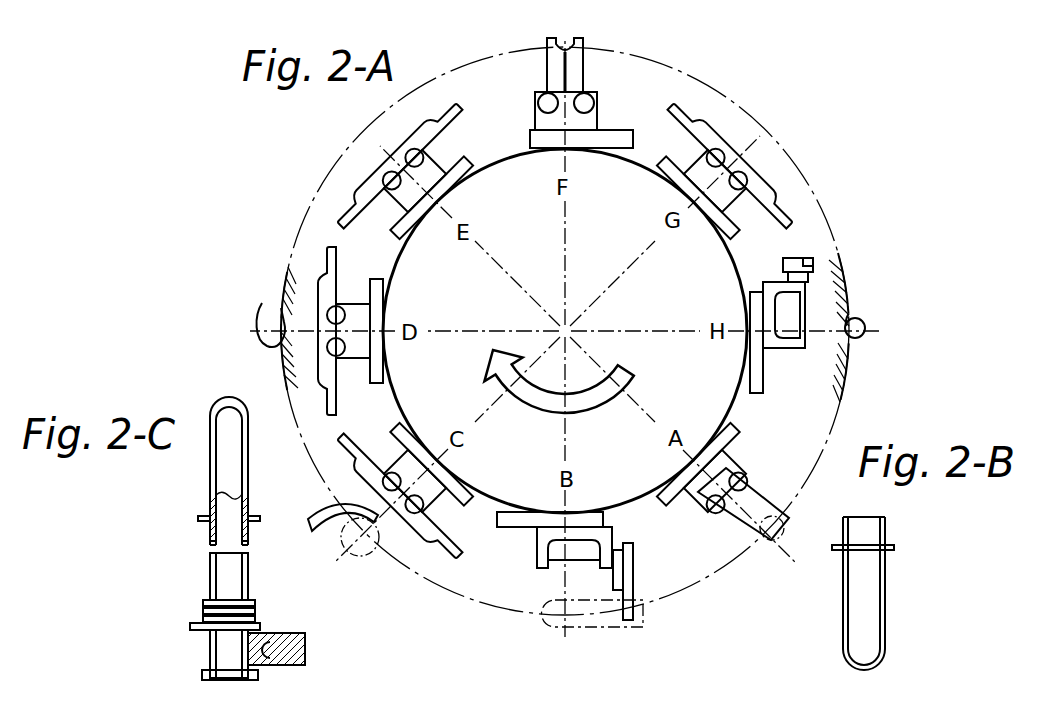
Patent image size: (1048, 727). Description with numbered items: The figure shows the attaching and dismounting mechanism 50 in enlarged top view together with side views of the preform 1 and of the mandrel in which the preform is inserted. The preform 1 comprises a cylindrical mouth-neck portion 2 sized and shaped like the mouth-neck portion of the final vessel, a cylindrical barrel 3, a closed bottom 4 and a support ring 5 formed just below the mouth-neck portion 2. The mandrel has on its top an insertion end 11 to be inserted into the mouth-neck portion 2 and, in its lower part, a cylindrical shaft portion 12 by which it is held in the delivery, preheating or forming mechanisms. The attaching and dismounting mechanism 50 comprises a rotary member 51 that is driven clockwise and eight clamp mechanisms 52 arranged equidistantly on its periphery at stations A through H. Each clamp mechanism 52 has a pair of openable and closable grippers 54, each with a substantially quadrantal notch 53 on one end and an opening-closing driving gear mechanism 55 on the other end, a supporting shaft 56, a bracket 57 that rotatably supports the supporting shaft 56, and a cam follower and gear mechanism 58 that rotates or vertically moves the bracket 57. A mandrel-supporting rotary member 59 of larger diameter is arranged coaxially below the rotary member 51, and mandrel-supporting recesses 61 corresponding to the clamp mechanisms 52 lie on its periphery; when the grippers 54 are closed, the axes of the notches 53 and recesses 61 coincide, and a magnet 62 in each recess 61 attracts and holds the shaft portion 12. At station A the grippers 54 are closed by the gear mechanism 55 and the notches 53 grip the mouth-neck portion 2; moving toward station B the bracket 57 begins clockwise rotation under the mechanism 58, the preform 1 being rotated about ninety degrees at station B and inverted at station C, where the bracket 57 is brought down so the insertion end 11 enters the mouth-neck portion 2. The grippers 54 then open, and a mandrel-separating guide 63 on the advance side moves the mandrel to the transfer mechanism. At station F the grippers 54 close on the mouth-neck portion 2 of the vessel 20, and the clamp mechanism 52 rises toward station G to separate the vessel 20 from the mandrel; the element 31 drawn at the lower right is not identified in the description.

In FIG. 2-A, the preform 1 is at (599, 627).
In FIG. 2-B, the preform 1 is at (892, 589).
In FIG. 2-C, the preform 1 is at (217, 475).
In FIG. 2-B, the mouth-neck portion 2 is at (883, 527).
In FIG. 2-C, the mouth-neck portion 2 is at (248, 536).
In FIG. 2-B, the cylindrical barrel 3 is at (885, 610).
In FIG. 2-B, the closed bottom 4 is at (875, 661).
In FIG. 2-B, the support ring 5 is at (895, 547).
In FIG. 2-C, the support ring 5 is at (258, 518).
In FIG. 2-C, the insertion end 11 is at (226, 548).
In FIG. 2-C, the cylindrical shaft portion 12 is at (218, 660).
In FIG. 2-A, the vessel 20 is at (868, 326).
In FIG. 2-A, the turntable 31 is at (742, 403).
In FIG. 2-A, the attaching and dismounting mechanism 50 is at (655, 105).
In FIG. 2-A, the rotary member 51 is at (680, 309).
In FIG. 2-A, the clamp mechanism 52 is at (773, 270).
In FIG. 2-A, the quadrantal notch 53 is at (707, 128).
In FIG. 2-A, the gripper 54 is at (720, 140).
In FIG. 2-A, the opening-closing driving gear mechanism 55 is at (750, 153).
In FIG. 2-A, the supporting shaft 56 is at (815, 280).
In FIG. 2-A, the bracket 57 is at (787, 348).
In FIG. 2-A, the cam follower and gear mechanism 58 is at (764, 385).
In FIG. 2-A, the mandrel-supporting rotary member 59 is at (843, 393).
In FIG. 2-C, the mandrel-supporting rotary member 59 is at (305, 637).
In FIG. 2-A, the mandrel-supporting recess 61 is at (866, 306).
In FIG. 2-A, the magnet 62 is at (265, 303).
In FIG. 2-C, the magnet 62 is at (305, 651).
In FIG. 2-A, the mandrel-separating guide 63 is at (340, 507).
In FIG. 2-C, the mandrel-separating guide 63 is at (262, 627).